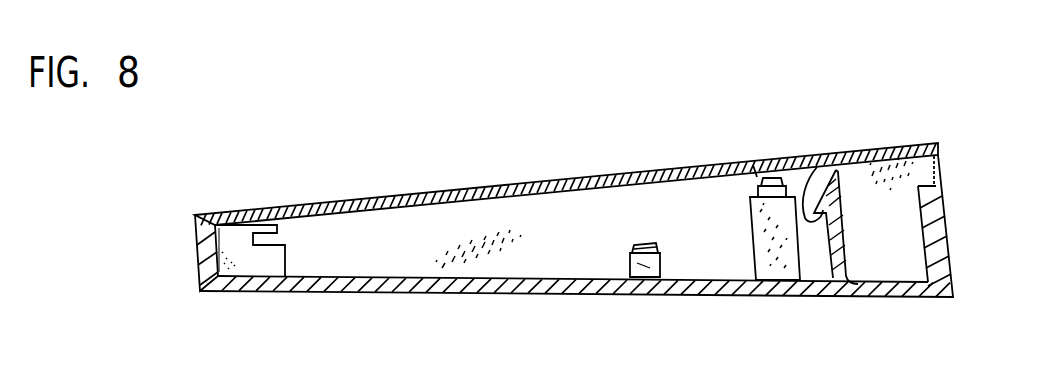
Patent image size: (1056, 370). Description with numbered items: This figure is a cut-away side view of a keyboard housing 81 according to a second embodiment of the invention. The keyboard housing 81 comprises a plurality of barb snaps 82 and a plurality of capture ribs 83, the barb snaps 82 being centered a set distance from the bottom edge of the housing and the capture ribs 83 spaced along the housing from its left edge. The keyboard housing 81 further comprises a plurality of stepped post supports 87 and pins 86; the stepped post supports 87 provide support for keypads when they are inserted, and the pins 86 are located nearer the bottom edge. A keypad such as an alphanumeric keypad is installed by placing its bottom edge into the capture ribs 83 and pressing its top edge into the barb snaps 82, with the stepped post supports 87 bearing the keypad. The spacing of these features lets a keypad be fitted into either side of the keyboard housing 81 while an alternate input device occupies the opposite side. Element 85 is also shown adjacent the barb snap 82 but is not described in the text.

The keyboard housing 81 is at (943, 202).
The barb snap 82 is at (842, 180).
The capture rib 83 is at (283, 233).
The hook spring 85 is at (812, 167).
The pin 86 is at (643, 243).
The stepped post support 87 is at (753, 167).